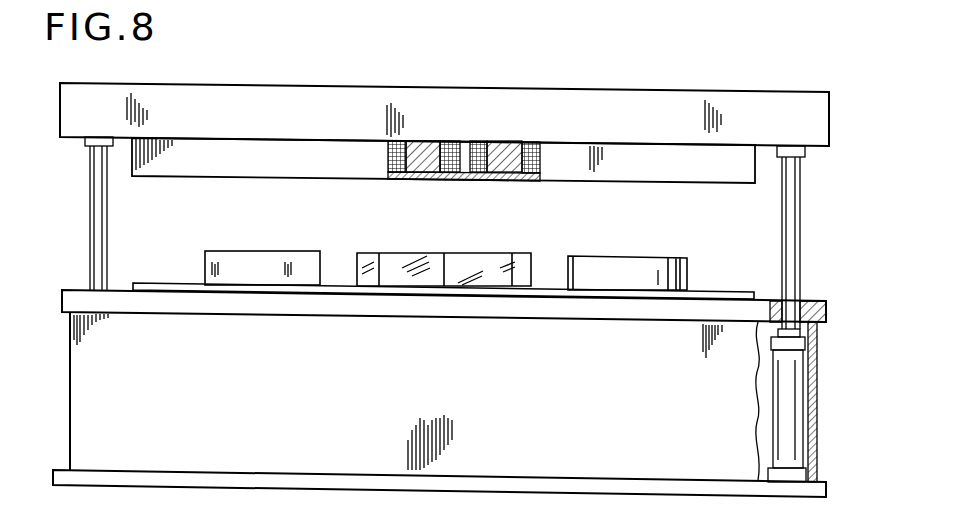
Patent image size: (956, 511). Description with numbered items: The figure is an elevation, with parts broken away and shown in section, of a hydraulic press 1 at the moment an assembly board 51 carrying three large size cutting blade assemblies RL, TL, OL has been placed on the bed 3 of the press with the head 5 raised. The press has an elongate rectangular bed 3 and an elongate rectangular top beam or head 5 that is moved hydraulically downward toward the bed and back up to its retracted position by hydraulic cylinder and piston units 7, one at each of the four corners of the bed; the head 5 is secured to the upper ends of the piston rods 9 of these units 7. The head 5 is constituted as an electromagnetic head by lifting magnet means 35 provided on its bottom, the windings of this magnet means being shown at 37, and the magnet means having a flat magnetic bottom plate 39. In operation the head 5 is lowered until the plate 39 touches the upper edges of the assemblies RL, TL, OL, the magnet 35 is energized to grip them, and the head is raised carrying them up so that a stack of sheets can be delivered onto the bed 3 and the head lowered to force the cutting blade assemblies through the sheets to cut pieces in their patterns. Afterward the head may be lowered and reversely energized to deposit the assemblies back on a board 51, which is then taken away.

The hydraulic press 1 is at (64, 349).
The bed 3 is at (460, 399).
The head 5 is at (508, 90).
The hydraulic cylinder and piston unit 7 is at (790, 425).
The piston rod 9 is at (88, 240).
The lifting magnet means 35 is at (270, 163).
The windings 37 is at (533, 141).
The magnetic bottom plate 39 is at (462, 181).
The assembly board 51 is at (166, 284).
The large size cutting blade assembly RL is at (289, 218).
The large size cutting blade assembly TL is at (440, 248).
The large size cutting blade assembly OL is at (644, 250).